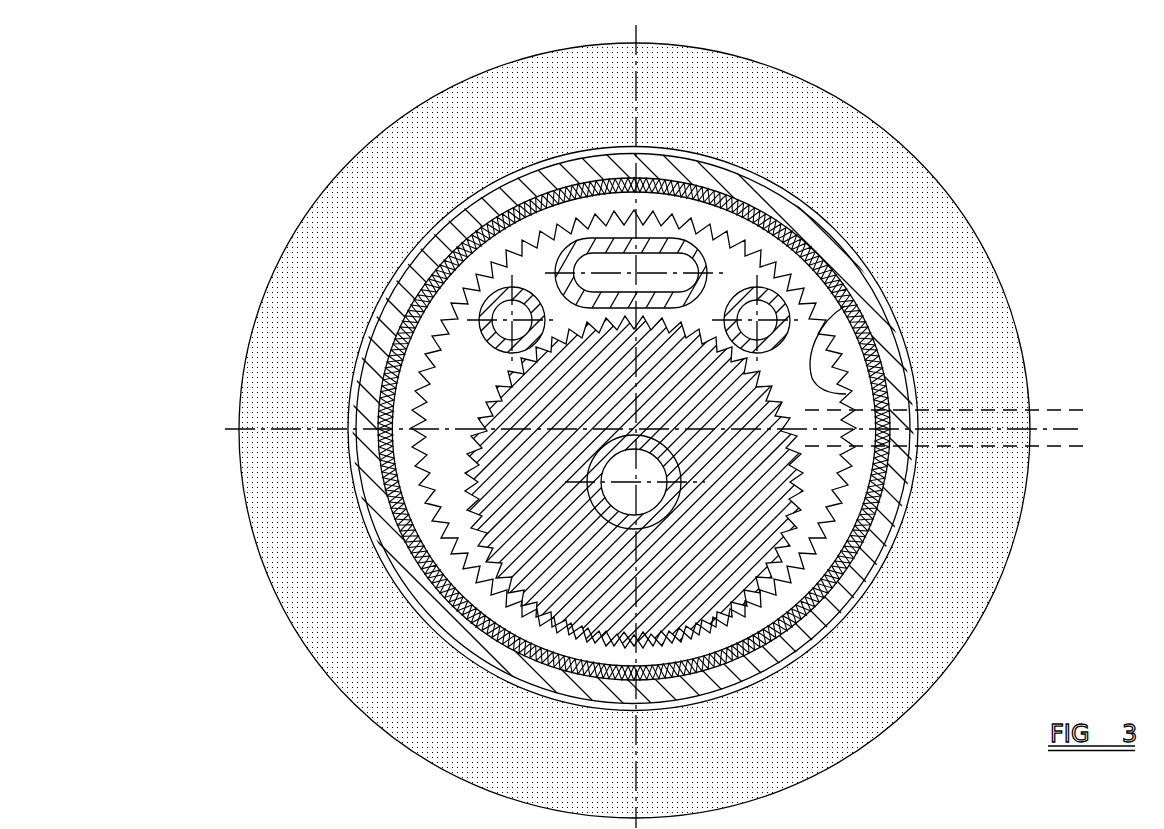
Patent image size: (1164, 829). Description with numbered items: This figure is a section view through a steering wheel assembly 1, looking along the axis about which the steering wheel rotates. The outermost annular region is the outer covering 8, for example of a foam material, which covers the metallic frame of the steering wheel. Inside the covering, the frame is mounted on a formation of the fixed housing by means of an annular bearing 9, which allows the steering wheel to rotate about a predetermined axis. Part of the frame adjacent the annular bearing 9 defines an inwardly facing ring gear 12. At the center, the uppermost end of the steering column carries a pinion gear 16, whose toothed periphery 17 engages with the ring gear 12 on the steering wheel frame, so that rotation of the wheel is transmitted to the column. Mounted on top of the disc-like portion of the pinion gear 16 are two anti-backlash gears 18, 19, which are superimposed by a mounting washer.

The steering wheel assembly 1 is at (282, 120).
The outer covering 8 is at (840, 167).
The annular bearing 9 is at (843, 280).
The ring gear 12 is at (905, 383).
The pinion gear 16 is at (735, 508).
The toothed periphery 17 is at (765, 399).
The anti-backlash gear 18 is at (961, 408).
The anti-backlash gear 19 is at (961, 448).